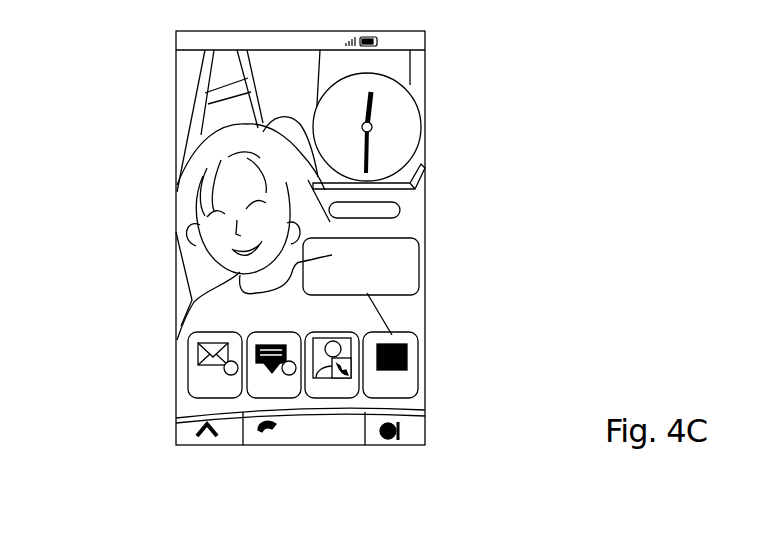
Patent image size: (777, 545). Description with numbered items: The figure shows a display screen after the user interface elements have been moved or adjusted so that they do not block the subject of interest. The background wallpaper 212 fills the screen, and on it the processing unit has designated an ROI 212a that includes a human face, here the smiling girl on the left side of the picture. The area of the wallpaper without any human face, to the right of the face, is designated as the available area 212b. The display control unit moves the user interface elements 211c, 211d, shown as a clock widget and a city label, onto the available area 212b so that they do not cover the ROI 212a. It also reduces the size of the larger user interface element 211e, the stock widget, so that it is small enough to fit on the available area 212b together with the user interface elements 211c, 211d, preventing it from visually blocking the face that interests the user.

The user interface element 211c is at (410, 100).
The user interface element 211d is at (400, 210).
The user interface element 211e is at (419, 270).
The background wallpaper 212 is at (410, 318).
The ROI 212a is at (200, 238).
The available area 212b is at (412, 302).